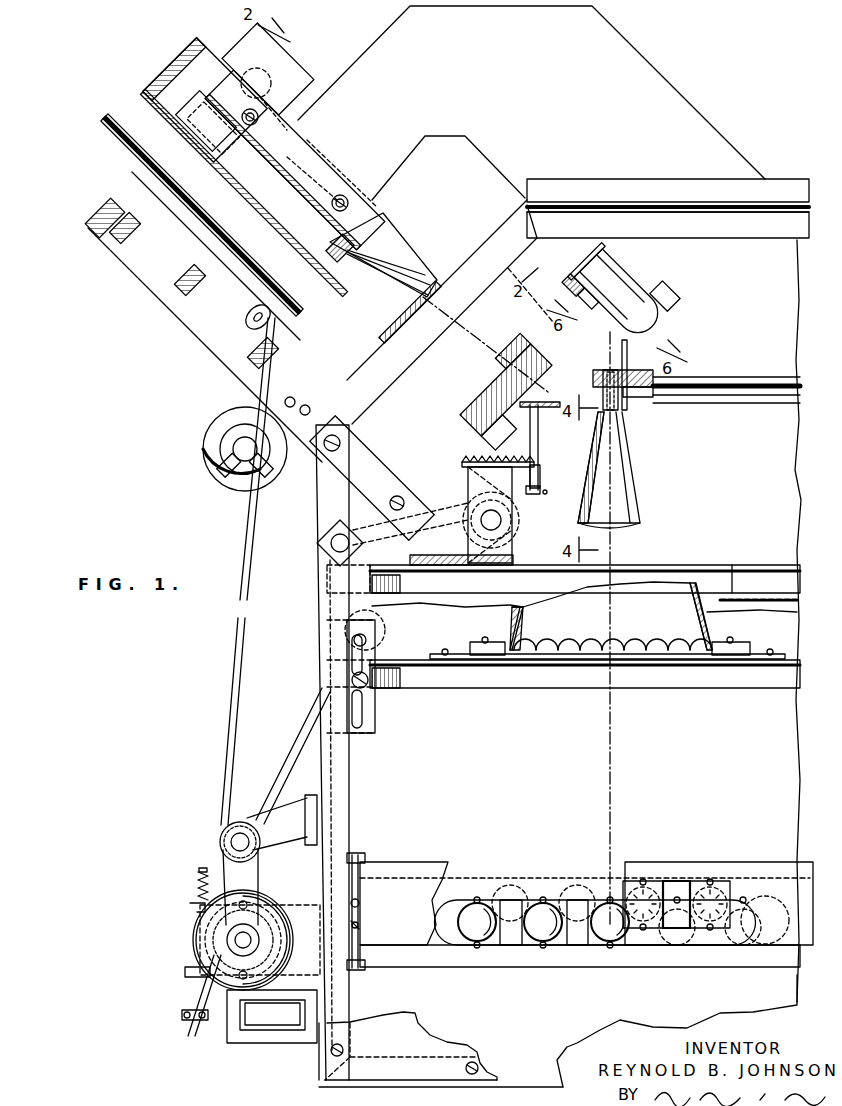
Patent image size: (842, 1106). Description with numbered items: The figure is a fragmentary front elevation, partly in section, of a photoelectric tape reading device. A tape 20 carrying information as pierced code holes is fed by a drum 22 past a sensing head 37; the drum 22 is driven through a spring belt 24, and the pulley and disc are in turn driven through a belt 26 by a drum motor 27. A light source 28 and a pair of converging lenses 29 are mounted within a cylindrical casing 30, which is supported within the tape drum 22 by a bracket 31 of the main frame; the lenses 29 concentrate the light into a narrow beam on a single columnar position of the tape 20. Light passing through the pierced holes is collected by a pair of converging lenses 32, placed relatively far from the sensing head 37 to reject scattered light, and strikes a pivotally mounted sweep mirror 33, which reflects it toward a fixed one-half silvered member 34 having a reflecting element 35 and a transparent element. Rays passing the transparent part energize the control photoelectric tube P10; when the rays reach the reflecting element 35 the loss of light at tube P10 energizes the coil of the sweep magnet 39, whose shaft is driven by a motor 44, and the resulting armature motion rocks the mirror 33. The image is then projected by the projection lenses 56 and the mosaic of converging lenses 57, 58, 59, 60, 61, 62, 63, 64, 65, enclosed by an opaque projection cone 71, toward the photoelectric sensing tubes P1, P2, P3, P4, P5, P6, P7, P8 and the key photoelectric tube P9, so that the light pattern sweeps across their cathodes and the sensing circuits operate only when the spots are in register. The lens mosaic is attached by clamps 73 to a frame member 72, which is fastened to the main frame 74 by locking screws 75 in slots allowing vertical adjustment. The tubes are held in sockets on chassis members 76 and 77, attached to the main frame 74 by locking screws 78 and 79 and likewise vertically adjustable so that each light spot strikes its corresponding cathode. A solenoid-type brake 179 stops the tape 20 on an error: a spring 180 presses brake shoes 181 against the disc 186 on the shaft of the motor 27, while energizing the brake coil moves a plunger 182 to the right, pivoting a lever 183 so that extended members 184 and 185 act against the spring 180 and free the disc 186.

The tape 20 is at (410, 325).
The drum 22 is at (148, 100).
The spring belt 24 is at (108, 120).
The belt 26 is at (255, 308).
The drum motor 27 is at (193, 943).
The light source 28 is at (272, 80).
The converging lenses 29 is at (317, 167).
The cylindrical casing 30 is at (376, 197).
The bracket 31 is at (692, 108).
The converging lenses 32 is at (512, 375).
The sweep mirror 33 is at (552, 408).
The one-half silvered member 34 is at (608, 338).
The reflecting element 35 is at (596, 329).
The sensing head 37 is at (425, 278).
The sweep magnet 39 is at (518, 506).
The motor 44 is at (203, 450).
The projection lenses 56 is at (618, 376).
The converging lens 57 is at (525, 650).
The converging lens 58 is at (550, 648).
The converging lens 59 is at (568, 650).
The converging lens 60 is at (592, 648).
The converging lens 61 is at (613, 650).
The converging lens 62 is at (635, 648).
The converging lens 63 is at (657, 650).
The converging lens 64 is at (678, 648).
The converging lens 65 is at (700, 650).
The opaque projection cone 71 is at (623, 470).
The frame member 72 is at (752, 690).
The clamps 73 is at (468, 648).
The main frame 74 is at (348, 810).
The locking screws 75 is at (375, 697).
The chassis member 76 is at (402, 860).
The chassis member 77 is at (500, 883).
The locking screws 78 is at (359, 903).
The locking screws 79 is at (360, 925).
The photoelectric sensing tube P1 is at (470, 940).
The photoelectric sensing tube P2 is at (493, 893).
The photoelectric sensing tube P3 is at (537, 940).
The photoelectric sensing tube P4 is at (562, 893).
The photoelectric sensing tube P5 is at (604, 940).
The photoelectric sensing tube P6 is at (655, 886).
The photoelectric sensing tube P7 is at (668, 945).
The photoelectric sensing tube P8 is at (722, 892).
The key photoelectric tube P9 is at (738, 945).
The control photoelectric tube P10 is at (655, 312).
The brake 179 is at (273, 1035).
The spring 180 is at (198, 884).
The brake shoes 181 is at (258, 905).
The plunger 182 is at (202, 1025).
The lever 183 is at (190, 1000).
The extended member 184 is at (185, 972).
The extended member 185 is at (190, 906).
The disc 186 is at (212, 945).